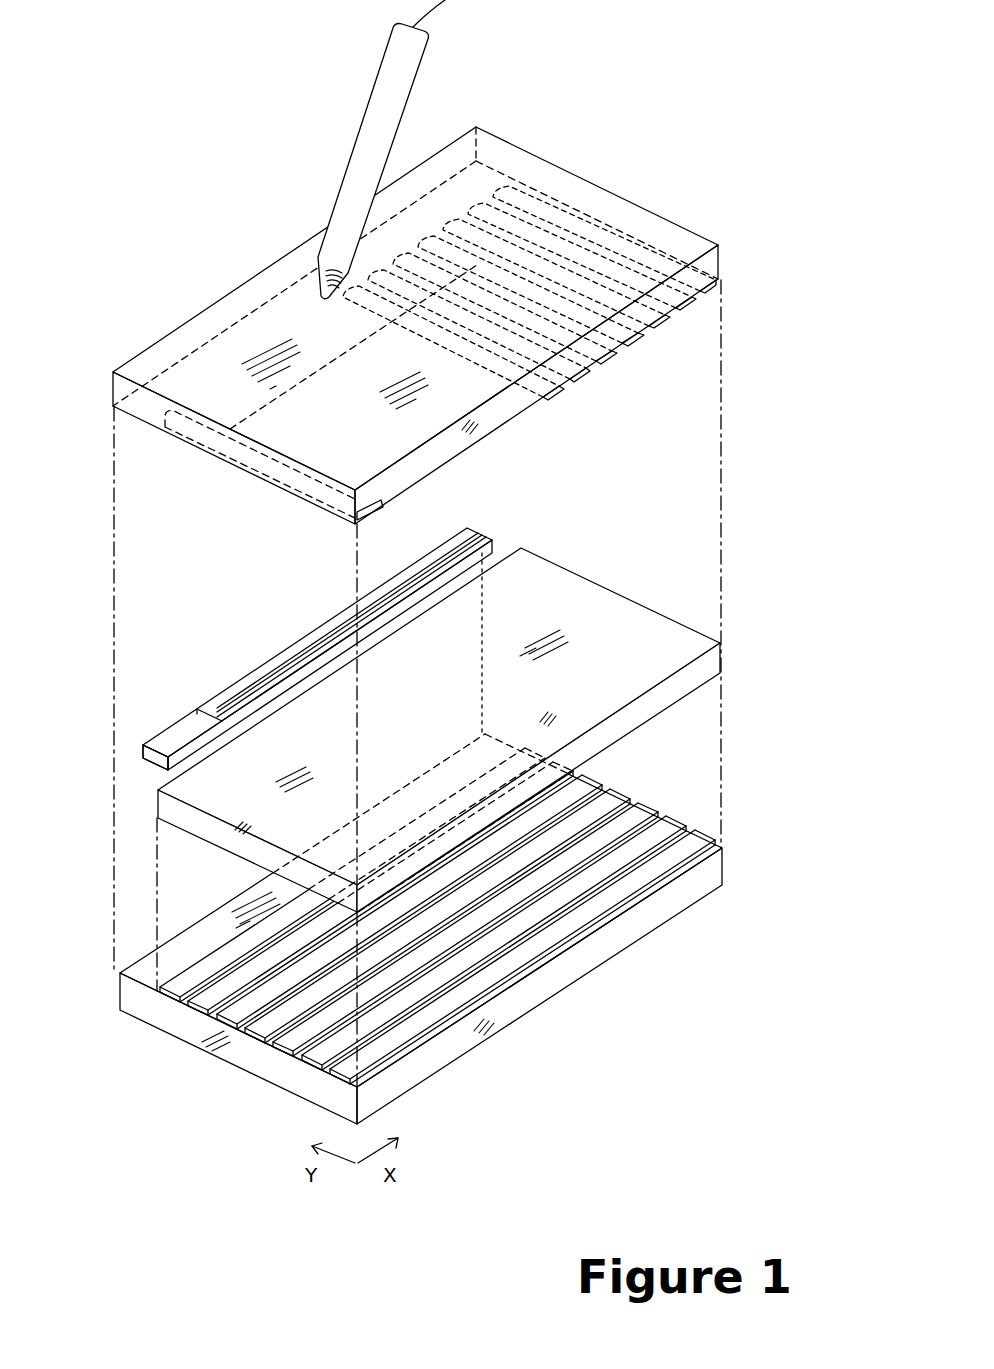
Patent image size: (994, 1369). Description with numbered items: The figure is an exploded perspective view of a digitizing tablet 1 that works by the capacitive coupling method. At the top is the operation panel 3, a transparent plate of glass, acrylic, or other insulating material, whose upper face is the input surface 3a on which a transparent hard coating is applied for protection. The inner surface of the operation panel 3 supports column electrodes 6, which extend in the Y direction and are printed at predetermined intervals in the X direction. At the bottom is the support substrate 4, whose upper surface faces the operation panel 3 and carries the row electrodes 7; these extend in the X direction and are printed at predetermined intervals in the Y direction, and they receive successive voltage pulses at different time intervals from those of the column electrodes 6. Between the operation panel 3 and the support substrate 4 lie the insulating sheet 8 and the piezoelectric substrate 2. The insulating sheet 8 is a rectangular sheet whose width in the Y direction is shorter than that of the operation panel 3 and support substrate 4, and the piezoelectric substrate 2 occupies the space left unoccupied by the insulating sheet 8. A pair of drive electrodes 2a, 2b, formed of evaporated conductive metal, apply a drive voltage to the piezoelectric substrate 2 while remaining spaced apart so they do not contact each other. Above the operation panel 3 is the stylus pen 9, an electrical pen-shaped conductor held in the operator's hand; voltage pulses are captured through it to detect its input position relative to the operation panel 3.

The digitizing tablet 1 is at (601, 104).
The piezoelectric substrate 2 is at (197, 710).
The drive electrode 2a is at (172, 738).
The drive electrode 2b is at (293, 653).
The operation panel 3 is at (640, 232).
The input surface 3a is at (272, 328).
The support substrate 4 is at (662, 905).
The column electrodes 6 is at (556, 398).
The row electrodes 7 is at (673, 820).
The insulating sheet 8 is at (613, 627).
The stylus pen 9 is at (402, 77).